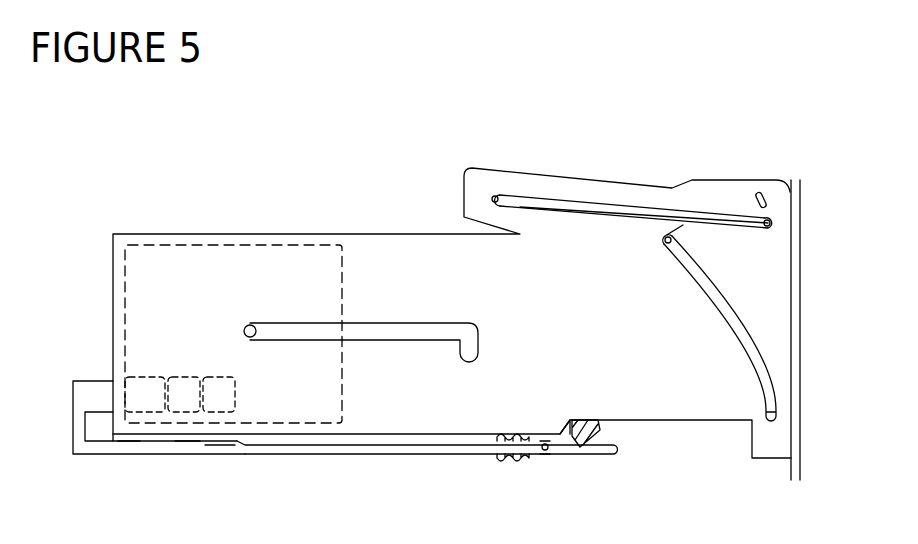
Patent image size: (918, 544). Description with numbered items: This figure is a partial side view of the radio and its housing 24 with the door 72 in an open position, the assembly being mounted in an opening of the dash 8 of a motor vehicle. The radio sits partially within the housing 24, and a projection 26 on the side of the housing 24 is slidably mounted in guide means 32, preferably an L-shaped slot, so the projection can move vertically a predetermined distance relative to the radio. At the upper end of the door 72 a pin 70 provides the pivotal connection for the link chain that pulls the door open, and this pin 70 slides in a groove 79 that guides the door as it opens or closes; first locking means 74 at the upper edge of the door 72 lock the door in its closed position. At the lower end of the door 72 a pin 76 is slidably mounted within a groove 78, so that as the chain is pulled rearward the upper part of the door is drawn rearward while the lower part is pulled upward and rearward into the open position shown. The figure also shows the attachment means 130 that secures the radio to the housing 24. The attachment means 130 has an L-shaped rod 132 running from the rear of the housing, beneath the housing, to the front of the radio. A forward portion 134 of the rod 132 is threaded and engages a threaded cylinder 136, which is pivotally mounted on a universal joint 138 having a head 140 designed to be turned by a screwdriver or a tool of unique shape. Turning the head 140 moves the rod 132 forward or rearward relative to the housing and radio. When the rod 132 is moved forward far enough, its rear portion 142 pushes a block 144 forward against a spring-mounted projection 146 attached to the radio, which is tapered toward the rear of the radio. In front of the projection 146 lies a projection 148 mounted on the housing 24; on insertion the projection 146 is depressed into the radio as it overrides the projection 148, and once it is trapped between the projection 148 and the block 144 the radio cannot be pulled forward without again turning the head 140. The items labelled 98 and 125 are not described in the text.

The dash 8 is at (802, 208).
The housing 24 is at (112, 265).
The projection 26 is at (249, 325).
The guide means 32 is at (354, 325).
The pin 70 is at (493, 196).
The door 72 is at (510, 200).
The first locking means 74 is at (770, 228).
The pin 76 is at (667, 237).
The groove 78 is at (776, 372).
The groove 79 is at (715, 213).
The slot 98 is at (763, 192).
The housing 125 is at (143, 232).
The attachment means 130 is at (340, 445).
The L-shaped rod 132 is at (218, 446).
The forward portion 134 is at (546, 455).
The threaded cylinder 136 is at (500, 462).
The universal joint 138 is at (586, 443).
The head 140 is at (598, 428).
The rear portion 142 is at (92, 392).
The block 144 is at (128, 440).
The spring-mounted projection 146 is at (186, 443).
The projection 148 is at (238, 392).